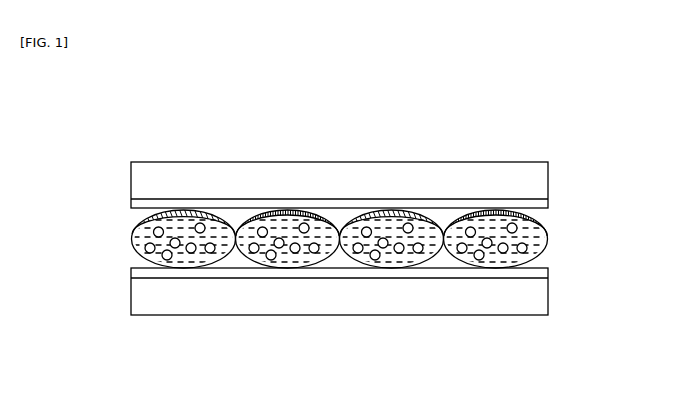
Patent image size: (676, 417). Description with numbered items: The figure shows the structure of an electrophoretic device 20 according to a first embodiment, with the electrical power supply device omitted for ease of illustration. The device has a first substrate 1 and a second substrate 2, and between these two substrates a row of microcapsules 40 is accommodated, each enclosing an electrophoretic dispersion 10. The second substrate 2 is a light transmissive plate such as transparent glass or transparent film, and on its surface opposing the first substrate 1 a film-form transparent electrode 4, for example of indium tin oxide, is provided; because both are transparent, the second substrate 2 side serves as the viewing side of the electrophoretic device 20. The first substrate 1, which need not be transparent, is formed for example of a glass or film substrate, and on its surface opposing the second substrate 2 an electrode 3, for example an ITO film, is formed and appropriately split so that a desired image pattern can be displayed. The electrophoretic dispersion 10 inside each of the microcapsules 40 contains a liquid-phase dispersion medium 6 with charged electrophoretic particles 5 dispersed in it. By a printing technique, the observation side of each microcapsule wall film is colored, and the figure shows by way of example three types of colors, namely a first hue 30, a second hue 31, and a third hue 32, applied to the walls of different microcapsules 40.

The first substrate 1 is at (193, 310).
The second substrate 2 is at (195, 168).
The electrode 3 is at (131, 278).
The transparent electrode 4 is at (131, 200).
The electrophoretic particles 5 is at (512, 227).
The dispersion medium 6 is at (545, 234).
The electrophoretic dispersion 10 is at (416, 172).
The electrophoretic device 20 is at (311, 161).
The first hue 30 is at (225, 222).
The second hue 31 is at (323, 218).
The third hue 32 is at (422, 213).
The microcapsules 40 is at (131, 246).